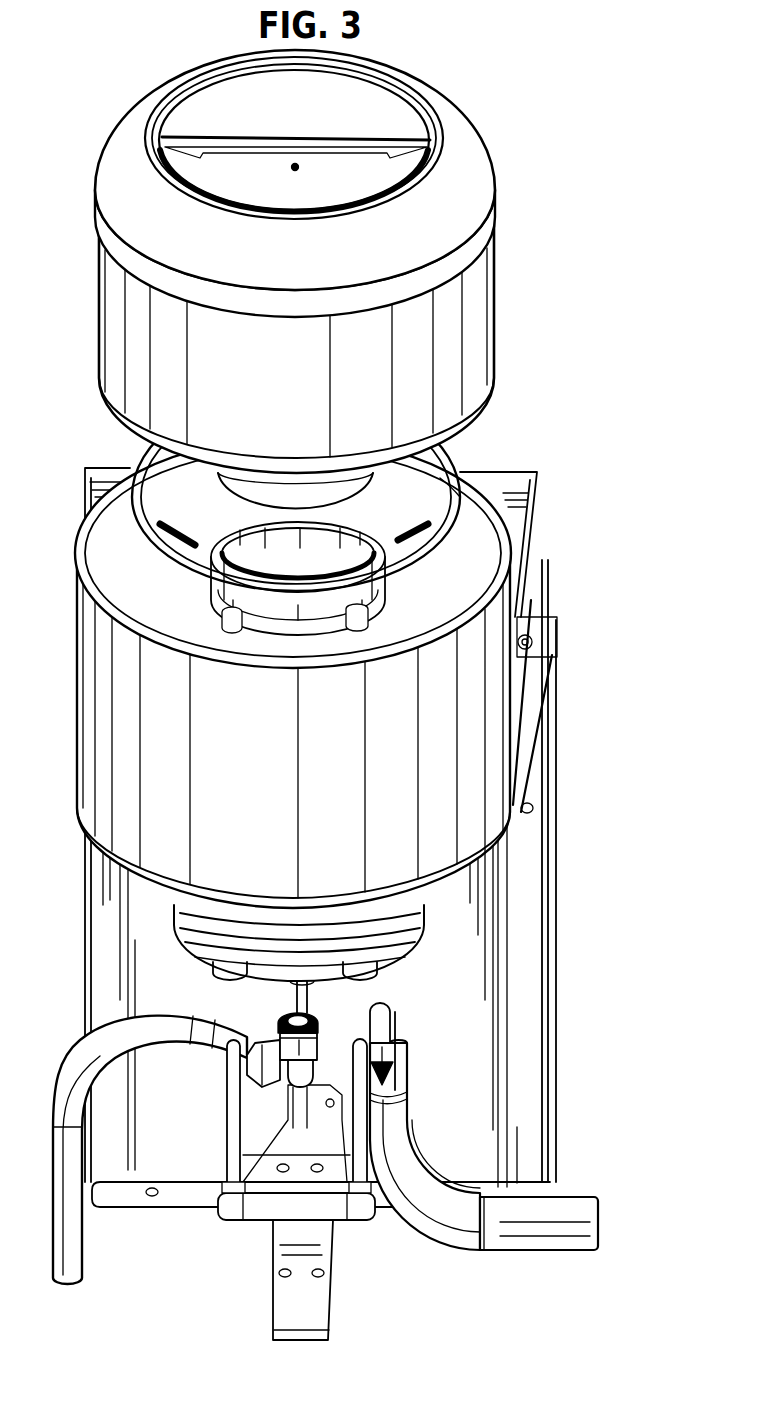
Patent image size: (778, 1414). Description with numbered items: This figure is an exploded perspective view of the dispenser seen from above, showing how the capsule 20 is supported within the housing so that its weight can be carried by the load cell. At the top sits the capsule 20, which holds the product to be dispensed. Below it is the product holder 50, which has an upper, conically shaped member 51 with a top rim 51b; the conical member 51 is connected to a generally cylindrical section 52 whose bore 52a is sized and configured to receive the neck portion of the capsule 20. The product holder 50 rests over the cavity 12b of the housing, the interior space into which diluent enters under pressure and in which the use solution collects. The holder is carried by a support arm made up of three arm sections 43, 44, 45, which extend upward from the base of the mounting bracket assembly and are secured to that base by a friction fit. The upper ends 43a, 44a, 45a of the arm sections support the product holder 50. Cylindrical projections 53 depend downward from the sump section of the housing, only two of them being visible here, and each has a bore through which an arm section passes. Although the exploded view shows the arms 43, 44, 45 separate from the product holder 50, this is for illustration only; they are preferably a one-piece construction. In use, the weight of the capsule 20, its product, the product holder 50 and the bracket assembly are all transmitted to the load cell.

The capsule 20 is at (477, 299).
The cavity 12b is at (482, 537).
The product holder 50 is at (307, 512).
The conically shaped member 51 is at (165, 477).
The top rim 51b is at (457, 447).
The cylindrical section 52 is at (297, 554).
The bore 52a is at (343, 562).
The cylindrical projections 53 is at (222, 620).
The arm section 43 is at (297, 997).
The upper end of arm section 43a is at (313, 984).
The arm section 44 is at (377, 1222).
The upper end of arm section 44a is at (366, 1040).
The arm section 45 is at (227, 1120).
The upper end of arm section 45a is at (240, 1037).